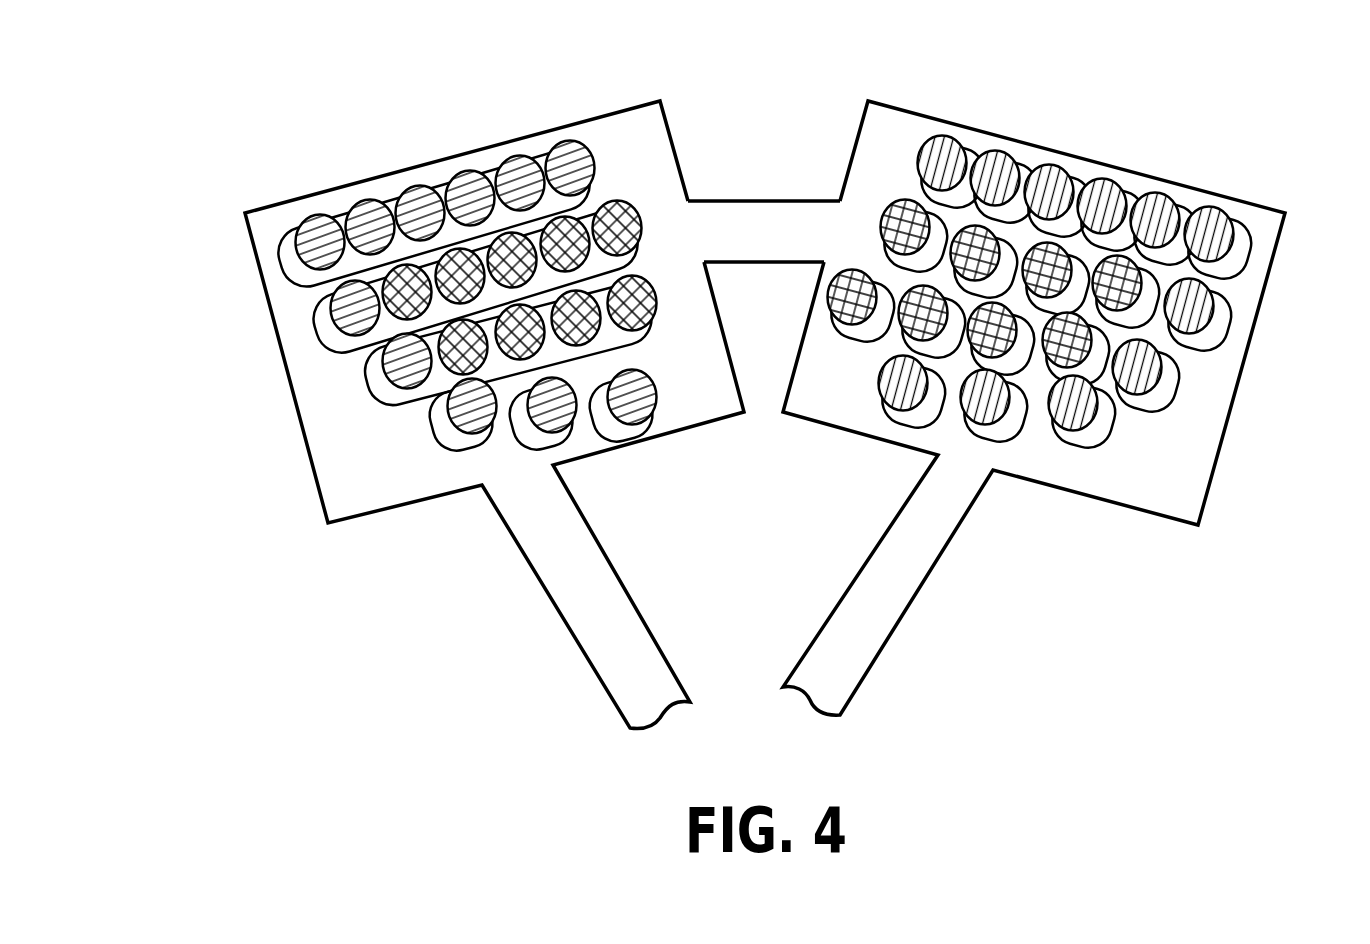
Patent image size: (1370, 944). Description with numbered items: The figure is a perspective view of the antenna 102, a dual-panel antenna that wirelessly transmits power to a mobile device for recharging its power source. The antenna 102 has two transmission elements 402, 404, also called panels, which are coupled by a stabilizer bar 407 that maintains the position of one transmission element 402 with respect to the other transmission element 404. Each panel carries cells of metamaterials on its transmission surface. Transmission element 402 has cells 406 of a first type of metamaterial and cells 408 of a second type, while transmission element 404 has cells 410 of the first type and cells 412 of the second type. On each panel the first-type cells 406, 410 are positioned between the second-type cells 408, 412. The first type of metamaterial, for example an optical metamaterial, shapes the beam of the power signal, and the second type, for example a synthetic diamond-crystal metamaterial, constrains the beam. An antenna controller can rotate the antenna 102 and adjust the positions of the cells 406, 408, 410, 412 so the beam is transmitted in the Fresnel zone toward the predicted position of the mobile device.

The antenna 102 is at (762, 382).
The transmission element 402 is at (327, 527).
The transmission element 404 is at (1200, 500).
The cells of a first type of metamaterial 406 is at (645, 260).
The stabilizer bar 407 is at (773, 263).
The cells of a second type of metamaterial 408 is at (300, 332).
The cells of the first type of metamaterial 410 is at (866, 255).
The cells of the second type of metamaterial 412 is at (1140, 178).